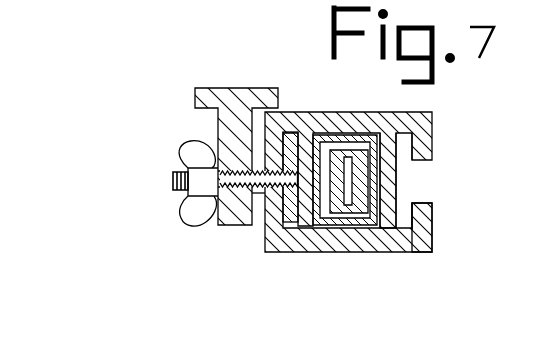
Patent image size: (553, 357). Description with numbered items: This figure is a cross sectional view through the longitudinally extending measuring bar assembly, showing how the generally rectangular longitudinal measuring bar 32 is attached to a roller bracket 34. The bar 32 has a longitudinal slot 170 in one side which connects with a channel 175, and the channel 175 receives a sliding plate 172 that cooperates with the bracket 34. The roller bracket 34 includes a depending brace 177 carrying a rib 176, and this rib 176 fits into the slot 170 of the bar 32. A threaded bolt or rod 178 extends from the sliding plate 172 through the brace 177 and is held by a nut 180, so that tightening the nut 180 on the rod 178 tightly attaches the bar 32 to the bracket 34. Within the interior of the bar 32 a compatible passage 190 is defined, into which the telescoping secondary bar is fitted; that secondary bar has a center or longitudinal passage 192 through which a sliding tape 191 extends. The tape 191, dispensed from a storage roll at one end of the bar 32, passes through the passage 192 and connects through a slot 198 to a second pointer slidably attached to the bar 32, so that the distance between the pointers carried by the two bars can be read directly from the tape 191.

The longitudinal measuring bar 32 is at (352, 119).
The roller bracket 34 is at (200, 88).
The longitudinal slot 170 is at (268, 200).
The sliding plate 172 is at (322, 225).
The channel 175 is at (305, 212).
The rib 176 is at (258, 168).
The depending brace 177 is at (223, 120).
The threaded bolt or rod 178 is at (217, 197).
The nut 180 is at (181, 212).
The passage 190 is at (352, 225).
The sliding tape 191 is at (400, 183).
The center or longitudinal passage 192 is at (383, 132).
The slot 198 is at (413, 221).